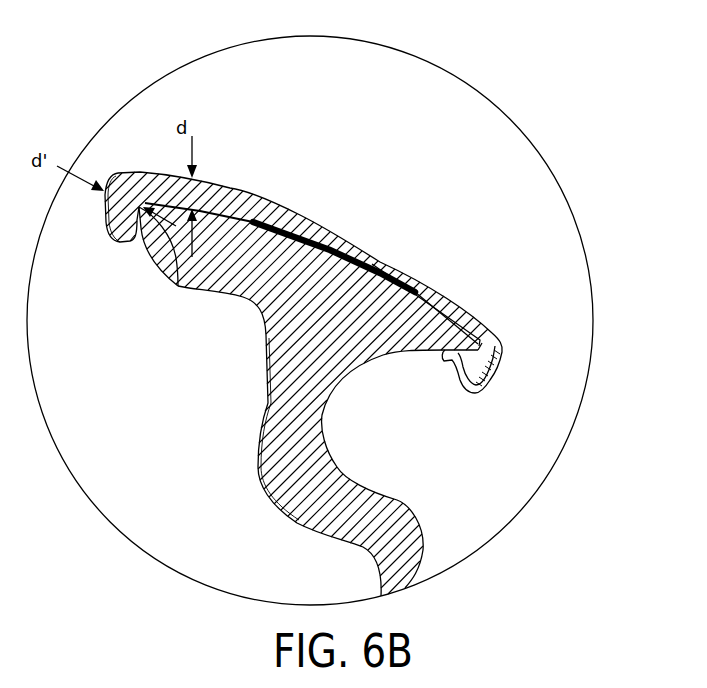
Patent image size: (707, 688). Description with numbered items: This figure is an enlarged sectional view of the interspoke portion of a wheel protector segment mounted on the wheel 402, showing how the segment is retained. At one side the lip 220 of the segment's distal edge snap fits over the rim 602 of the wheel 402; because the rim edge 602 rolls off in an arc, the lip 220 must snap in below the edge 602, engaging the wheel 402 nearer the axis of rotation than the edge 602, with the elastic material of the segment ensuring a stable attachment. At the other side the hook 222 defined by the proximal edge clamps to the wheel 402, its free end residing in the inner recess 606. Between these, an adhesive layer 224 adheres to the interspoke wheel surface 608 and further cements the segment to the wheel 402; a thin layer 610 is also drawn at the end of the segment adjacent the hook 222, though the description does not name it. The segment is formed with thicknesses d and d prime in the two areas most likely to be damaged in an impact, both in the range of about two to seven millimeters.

The lip 220 is at (127, 239).
The hook 222 is at (497, 367).
The adhesive layer 224 is at (366, 258).
The wheel 402 is at (258, 482).
The rim 602 is at (178, 288).
The inner recess 606 is at (392, 392).
The interspoke wheel surface 608 is at (245, 300).
The film layer 610 is at (477, 343).